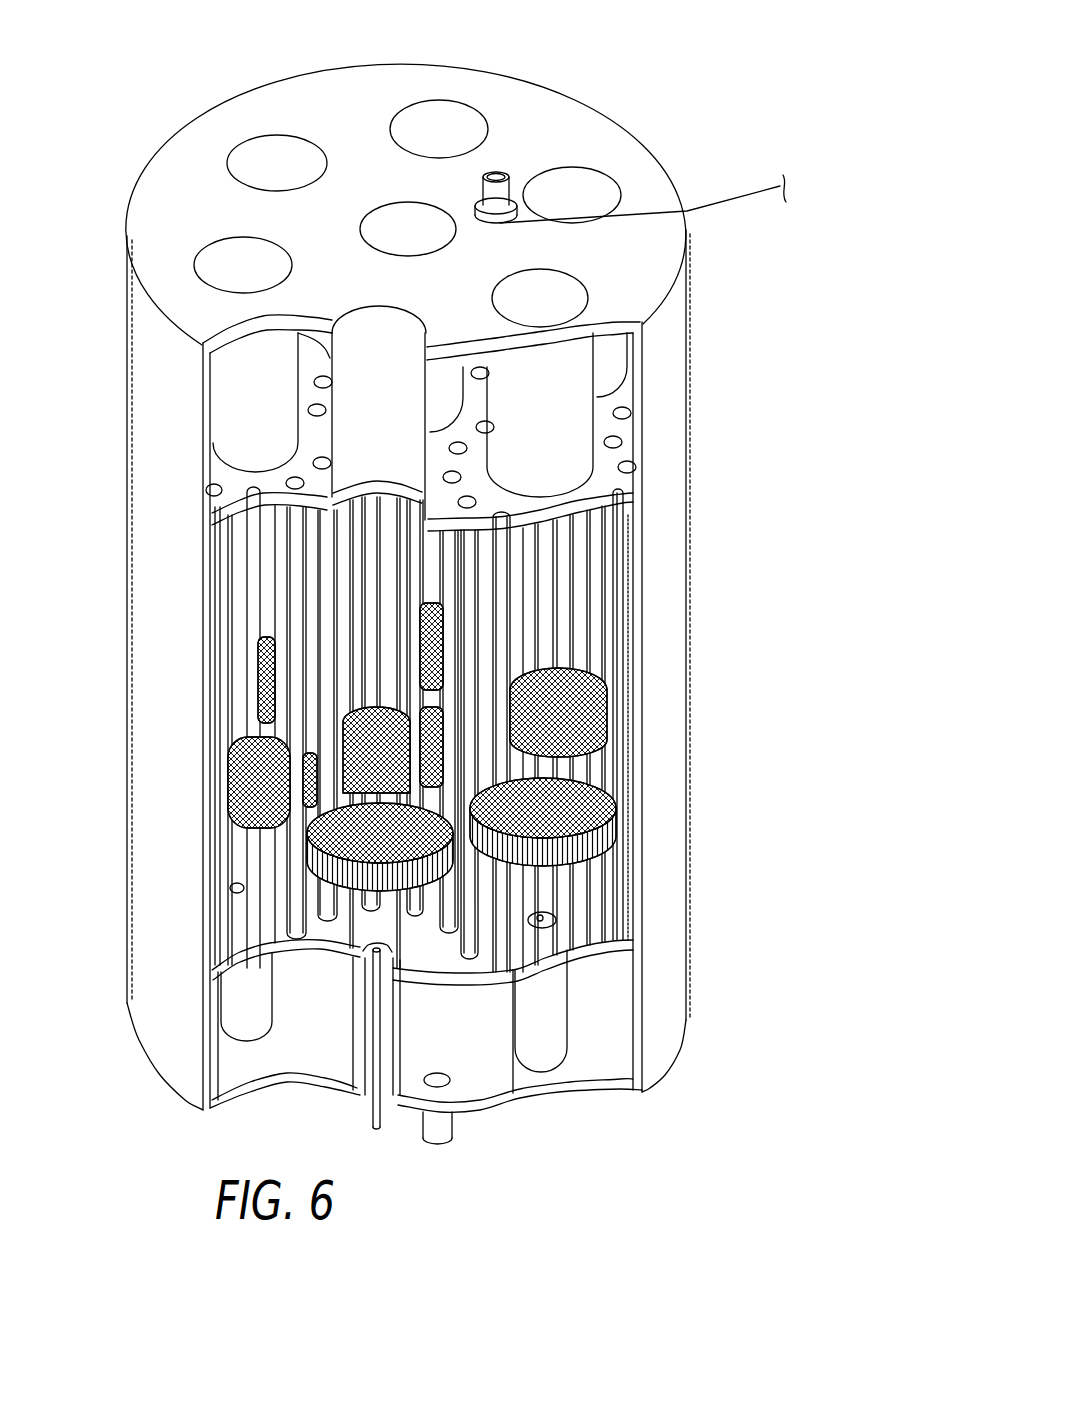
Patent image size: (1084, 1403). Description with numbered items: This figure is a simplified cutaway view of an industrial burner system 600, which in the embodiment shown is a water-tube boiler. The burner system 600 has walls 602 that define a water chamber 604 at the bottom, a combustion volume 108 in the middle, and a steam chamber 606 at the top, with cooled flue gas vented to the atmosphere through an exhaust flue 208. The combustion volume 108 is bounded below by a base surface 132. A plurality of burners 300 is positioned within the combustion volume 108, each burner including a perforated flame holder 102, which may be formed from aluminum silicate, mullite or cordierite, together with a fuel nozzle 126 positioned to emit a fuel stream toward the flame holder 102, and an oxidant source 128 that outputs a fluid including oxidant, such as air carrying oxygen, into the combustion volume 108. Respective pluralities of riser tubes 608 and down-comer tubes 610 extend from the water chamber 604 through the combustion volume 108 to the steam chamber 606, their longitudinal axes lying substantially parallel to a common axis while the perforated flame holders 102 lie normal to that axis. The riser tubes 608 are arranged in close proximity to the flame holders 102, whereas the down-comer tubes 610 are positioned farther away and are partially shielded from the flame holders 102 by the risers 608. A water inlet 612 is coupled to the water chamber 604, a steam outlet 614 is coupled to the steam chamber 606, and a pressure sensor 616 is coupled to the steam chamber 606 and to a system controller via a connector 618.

The industrial burner system 600 is at (694, 47).
The exhaust flue 208 is at (387, 128).
The steam outlet 614 is at (494, 173).
The pressure sensor 616 is at (478, 212).
The connector 618 is at (731, 209).
The walls 602 is at (203, 393).
The steam chamber 606 is at (612, 421).
The riser tubes 608 is at (463, 445).
The down-comer tubes 610 is at (220, 672).
The combustion volume 108 is at (610, 642).
The perforated flame holder 102 is at (617, 847).
The burners 300 is at (632, 860).
The base surface 132 is at (593, 916).
The fuel nozzle 126 is at (370, 963).
The oxidant source 128 is at (365, 1023).
The water chamber 604 is at (587, 1042).
The water inlet 612 is at (457, 1123).